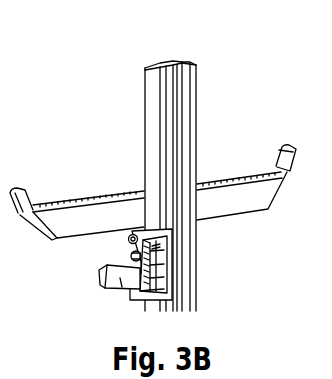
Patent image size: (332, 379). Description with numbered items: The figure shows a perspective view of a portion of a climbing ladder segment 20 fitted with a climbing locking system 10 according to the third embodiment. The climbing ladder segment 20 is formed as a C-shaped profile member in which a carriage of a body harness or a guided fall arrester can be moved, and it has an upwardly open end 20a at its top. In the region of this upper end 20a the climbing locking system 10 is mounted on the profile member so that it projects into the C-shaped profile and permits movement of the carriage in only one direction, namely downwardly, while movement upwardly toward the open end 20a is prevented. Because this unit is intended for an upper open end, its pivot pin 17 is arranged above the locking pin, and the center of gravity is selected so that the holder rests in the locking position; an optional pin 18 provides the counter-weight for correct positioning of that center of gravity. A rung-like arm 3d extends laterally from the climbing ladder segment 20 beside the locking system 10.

The climbing ladder segment 20 is at (152, 123).
The upwardly open end 20a is at (192, 67).
The support arm / tray 3d is at (73, 212).
The pivot pin 17 is at (127, 238).
The pin 18 is at (120, 288).
The climbing locking system 10 is at (173, 260).